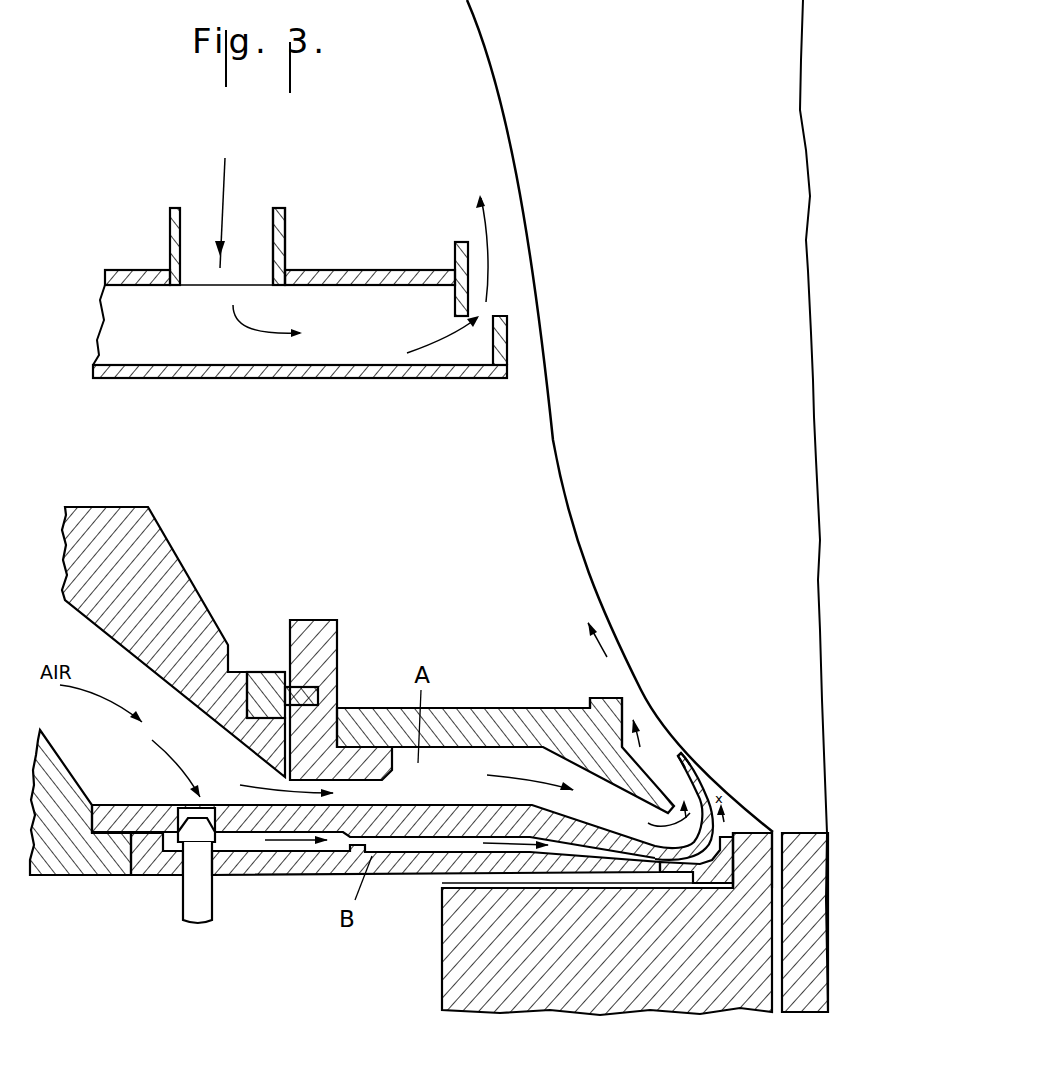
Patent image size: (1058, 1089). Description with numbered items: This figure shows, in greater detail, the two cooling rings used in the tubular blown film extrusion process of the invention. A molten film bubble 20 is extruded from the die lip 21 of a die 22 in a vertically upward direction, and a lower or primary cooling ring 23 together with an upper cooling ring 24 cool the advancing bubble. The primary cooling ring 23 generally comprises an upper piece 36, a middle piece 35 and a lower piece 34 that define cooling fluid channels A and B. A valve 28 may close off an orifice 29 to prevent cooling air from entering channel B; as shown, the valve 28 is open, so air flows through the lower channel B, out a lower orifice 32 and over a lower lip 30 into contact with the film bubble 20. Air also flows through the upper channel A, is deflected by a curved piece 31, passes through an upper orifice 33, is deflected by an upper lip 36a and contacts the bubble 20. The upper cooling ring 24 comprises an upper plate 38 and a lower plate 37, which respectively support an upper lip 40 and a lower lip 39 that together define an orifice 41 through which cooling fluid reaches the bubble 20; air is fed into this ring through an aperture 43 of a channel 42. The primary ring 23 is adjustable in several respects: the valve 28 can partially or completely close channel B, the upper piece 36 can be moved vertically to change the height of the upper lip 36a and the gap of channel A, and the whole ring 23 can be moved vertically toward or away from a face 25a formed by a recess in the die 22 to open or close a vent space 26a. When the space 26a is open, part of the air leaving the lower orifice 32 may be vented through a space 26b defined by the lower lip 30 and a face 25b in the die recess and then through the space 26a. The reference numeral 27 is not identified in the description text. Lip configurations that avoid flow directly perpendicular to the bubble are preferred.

The molten film bubble 20 is at (567, 488).
The die lip 21 is at (780, 832).
The die 22 is at (425, 981).
The lower or primary cooling ring 23 is at (108, 888).
The upper cooling ring 24 is at (160, 256).
The face 25a is at (588, 885).
The face 25b is at (730, 880).
The vent space 26a is at (438, 885).
The space 26b is at (735, 835).
The lower plate 27 is at (300, 875).
The valve 28 is at (190, 913).
The orifice 29 is at (210, 805).
The lower lip 30 is at (727, 830).
The curved piece 31 is at (697, 776).
The lower orifice 32 is at (712, 860).
The upper orifice 33 is at (668, 762).
The lower piece 34 is at (260, 870).
The middle piece 35 is at (447, 813).
The upper piece 36 is at (475, 710).
The upper lip 36a is at (622, 698).
The lower plate 37 is at (337, 380).
The upper plate 38 is at (362, 272).
The lower lip 39 is at (498, 352).
The upper lip 40 is at (456, 254).
The orifice 41 is at (493, 302).
The channel 42 is at (286, 237).
The aperture 43 is at (268, 228).